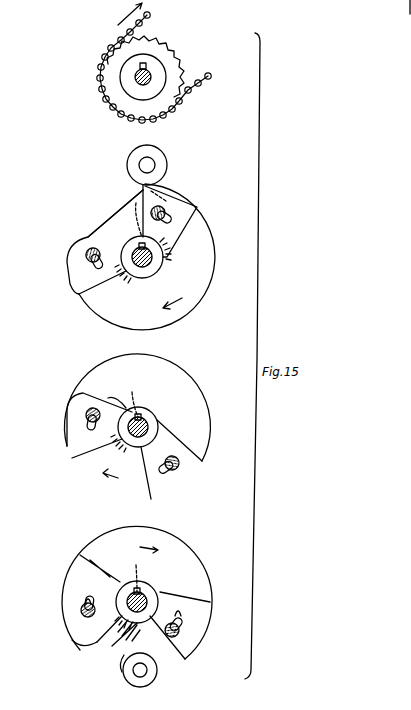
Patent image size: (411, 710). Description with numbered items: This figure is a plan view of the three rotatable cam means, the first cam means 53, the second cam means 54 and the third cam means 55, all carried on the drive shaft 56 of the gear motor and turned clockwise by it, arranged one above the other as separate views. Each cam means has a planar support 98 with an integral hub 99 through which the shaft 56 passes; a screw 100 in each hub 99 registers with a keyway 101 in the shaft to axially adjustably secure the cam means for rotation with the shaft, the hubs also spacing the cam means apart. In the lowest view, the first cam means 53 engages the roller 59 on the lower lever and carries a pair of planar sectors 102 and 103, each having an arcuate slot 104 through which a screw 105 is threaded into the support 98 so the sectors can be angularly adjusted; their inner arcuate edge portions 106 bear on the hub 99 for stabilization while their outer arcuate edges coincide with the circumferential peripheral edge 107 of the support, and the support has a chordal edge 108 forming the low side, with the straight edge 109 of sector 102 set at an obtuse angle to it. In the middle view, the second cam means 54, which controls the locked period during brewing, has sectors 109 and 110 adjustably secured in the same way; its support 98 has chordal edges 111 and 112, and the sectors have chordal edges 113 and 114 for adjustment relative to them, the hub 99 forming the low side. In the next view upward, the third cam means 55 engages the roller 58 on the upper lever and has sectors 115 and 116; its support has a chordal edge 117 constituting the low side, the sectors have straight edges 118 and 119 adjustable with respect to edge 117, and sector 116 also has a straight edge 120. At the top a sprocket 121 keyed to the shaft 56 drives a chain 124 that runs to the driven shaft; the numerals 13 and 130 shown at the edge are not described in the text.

The lever 13 is at (403, 63).
The first cam means 53 is at (57, 558).
The second cam means 54 is at (54, 413).
The third cam means 55 is at (59, 265).
The drive shaft 56 is at (135, 80).
The roller 58 is at (161, 154).
The roller 59 is at (156, 680).
The planar support 98 is at (190, 300).
The hub 99 is at (160, 263).
The screw 100 is at (130, 210).
The keyway 101 is at (147, 246).
The planar sector 102 is at (72, 629).
The planar sector 103 is at (185, 640).
The arcuate slot 104 is at (86, 598).
The screw 105 is at (82, 614).
The inner arcuate edge portion 106 is at (118, 644).
The circumferential peripheral edge 107 is at (92, 540).
The chordal edge 108 is at (120, 653).
The straight edge 109 is at (74, 447).
The planar sector 110 is at (196, 470).
The chordal edge 111 is at (116, 398).
The chordal edge 112 is at (165, 425).
The chordal edge 113 is at (104, 398).
The chordal edge 114 is at (195, 452).
The sector 115 is at (76, 291).
The sector 116 is at (190, 205).
The chordal edge 117 is at (110, 216).
The straight edge 118 is at (88, 235).
The straight edge 119 is at (143, 190).
The straight edge 120 is at (166, 183).
The sprocket 121 is at (106, 74).
The chain 124 is at (150, 17).
The lever 130 is at (406, 33).